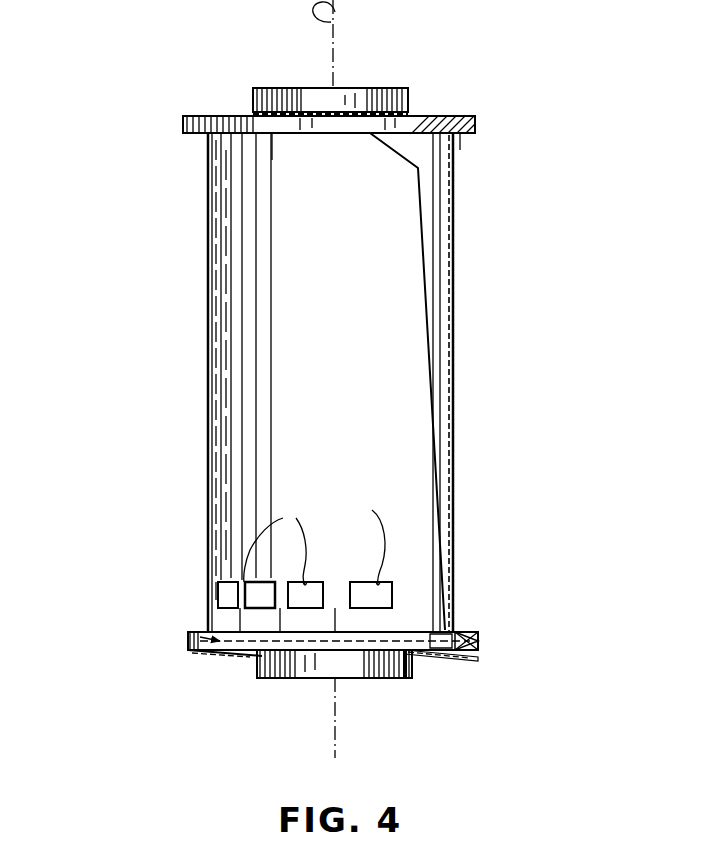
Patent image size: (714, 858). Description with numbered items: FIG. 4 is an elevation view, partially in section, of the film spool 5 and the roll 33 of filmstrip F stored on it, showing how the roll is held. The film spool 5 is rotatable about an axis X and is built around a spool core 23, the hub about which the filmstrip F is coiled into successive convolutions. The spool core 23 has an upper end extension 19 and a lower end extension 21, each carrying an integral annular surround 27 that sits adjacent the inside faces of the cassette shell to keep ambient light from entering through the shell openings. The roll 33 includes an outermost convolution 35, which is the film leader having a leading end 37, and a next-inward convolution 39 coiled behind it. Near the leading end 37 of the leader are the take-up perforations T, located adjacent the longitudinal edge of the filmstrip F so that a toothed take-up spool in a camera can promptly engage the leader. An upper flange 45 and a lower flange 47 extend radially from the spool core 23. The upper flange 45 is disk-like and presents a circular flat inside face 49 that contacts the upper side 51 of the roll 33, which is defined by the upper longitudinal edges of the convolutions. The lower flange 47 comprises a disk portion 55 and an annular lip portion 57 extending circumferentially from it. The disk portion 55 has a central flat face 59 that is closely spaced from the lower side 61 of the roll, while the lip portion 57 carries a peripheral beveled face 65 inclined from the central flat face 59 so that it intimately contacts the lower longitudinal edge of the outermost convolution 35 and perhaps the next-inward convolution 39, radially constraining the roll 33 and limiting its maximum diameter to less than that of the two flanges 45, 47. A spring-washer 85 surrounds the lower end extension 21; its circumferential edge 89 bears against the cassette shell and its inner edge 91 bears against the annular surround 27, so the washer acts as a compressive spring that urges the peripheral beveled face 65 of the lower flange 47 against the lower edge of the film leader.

The axis X is at (338, 10).
The film spool 5 is at (314, 382).
The upper end extension 19 is at (407, 98).
The lower end extension 21 is at (290, 668).
The spool core 23 is at (252, 90).
The annular surround 27 is at (252, 113).
The roll of filmstrip 33 is at (314, 382).
The outermost convolution 35 is at (212, 283).
The leading end 37 is at (425, 250).
The next-inward convolution 39 is at (452, 230).
The upper flange 45 is at (480, 124).
The lower flange 47 is at (482, 638).
The inside face 49 is at (462, 133).
The upper side 51 is at (272, 133).
The disk portion 55 is at (355, 663).
The annular lip portion 57 is at (478, 655).
The central flat face 59 is at (435, 633).
The lower side 61 is at (342, 640).
The peripheral beveled face 65 is at (457, 640).
The spring-washer 85 is at (192, 655).
The circumferential edge 89 is at (455, 665).
The inner edge 91 is at (410, 665).
The filmstrip F is at (230, 207).
The take-up perforations T is at (314, 540).